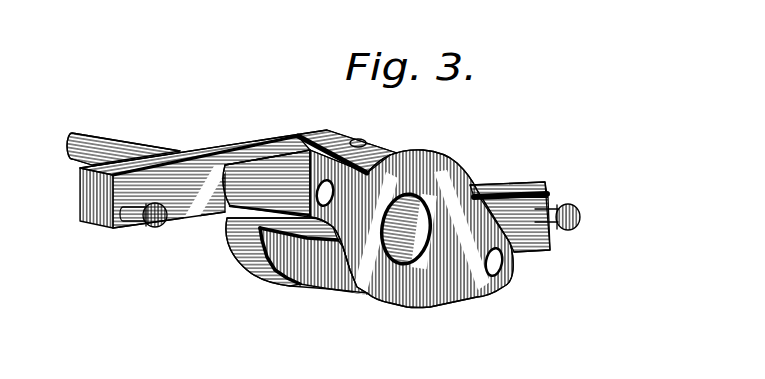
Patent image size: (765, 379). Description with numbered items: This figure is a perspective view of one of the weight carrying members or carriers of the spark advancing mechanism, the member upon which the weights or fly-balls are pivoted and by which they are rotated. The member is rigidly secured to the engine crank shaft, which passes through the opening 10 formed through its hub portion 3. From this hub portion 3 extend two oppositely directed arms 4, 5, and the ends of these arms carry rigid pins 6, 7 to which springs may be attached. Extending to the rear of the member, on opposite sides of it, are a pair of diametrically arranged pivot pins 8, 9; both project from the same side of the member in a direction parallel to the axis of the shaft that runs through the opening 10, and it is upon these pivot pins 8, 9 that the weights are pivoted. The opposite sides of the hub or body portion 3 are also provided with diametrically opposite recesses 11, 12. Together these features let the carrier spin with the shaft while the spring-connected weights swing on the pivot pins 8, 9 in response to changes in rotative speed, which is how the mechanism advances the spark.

The hub portion 3 is at (410, 172).
The arm 4 is at (192, 152).
The arm 5 is at (492, 194).
The rigid pin 6 is at (157, 228).
The rigid pin 7 is at (572, 207).
The pivot pin 8 is at (110, 140).
The pivot pin 9 is at (502, 266).
The opening 10 is at (423, 194).
The recess 11 is at (355, 140).
The recess 12 is at (300, 250).